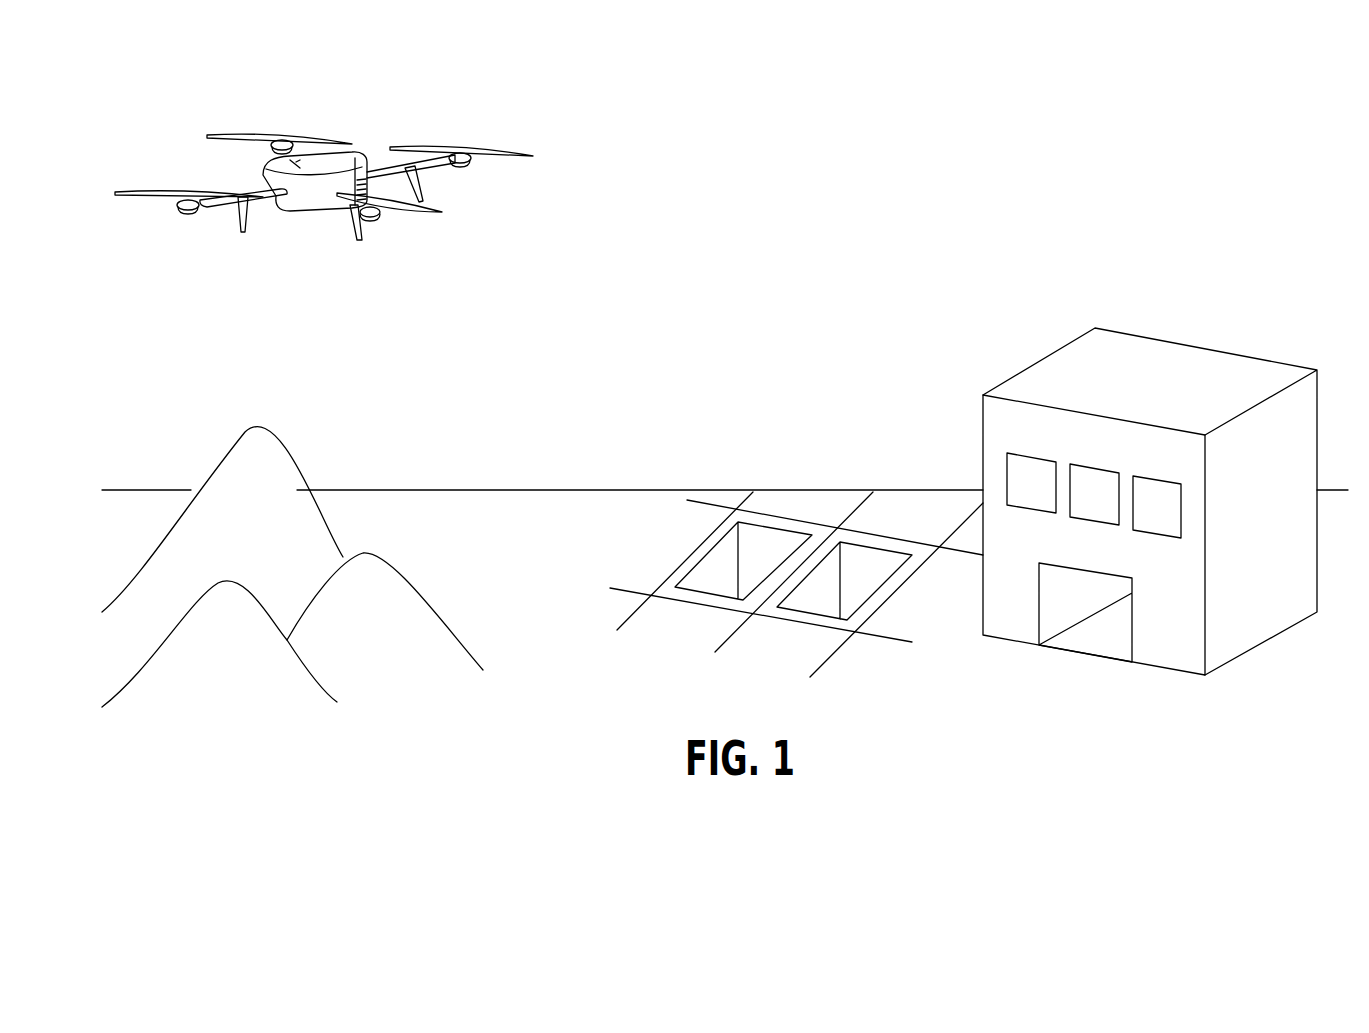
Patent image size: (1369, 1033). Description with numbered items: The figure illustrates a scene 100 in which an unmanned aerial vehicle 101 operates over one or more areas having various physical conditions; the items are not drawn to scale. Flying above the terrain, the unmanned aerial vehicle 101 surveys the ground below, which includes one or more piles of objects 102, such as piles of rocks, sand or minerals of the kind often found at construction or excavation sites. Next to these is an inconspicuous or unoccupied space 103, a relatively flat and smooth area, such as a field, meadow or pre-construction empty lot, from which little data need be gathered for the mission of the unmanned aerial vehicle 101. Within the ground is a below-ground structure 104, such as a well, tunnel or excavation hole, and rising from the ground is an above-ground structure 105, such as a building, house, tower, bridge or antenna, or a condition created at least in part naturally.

The scene 100 is at (1177, 103).
The unmanned aerial vehicle 101 is at (305, 89).
The piles of objects 102 is at (245, 364).
The unoccupied space 103 is at (516, 437).
The below-ground structure 104 is at (826, 407).
The above-ground structure 105 is at (1140, 255).